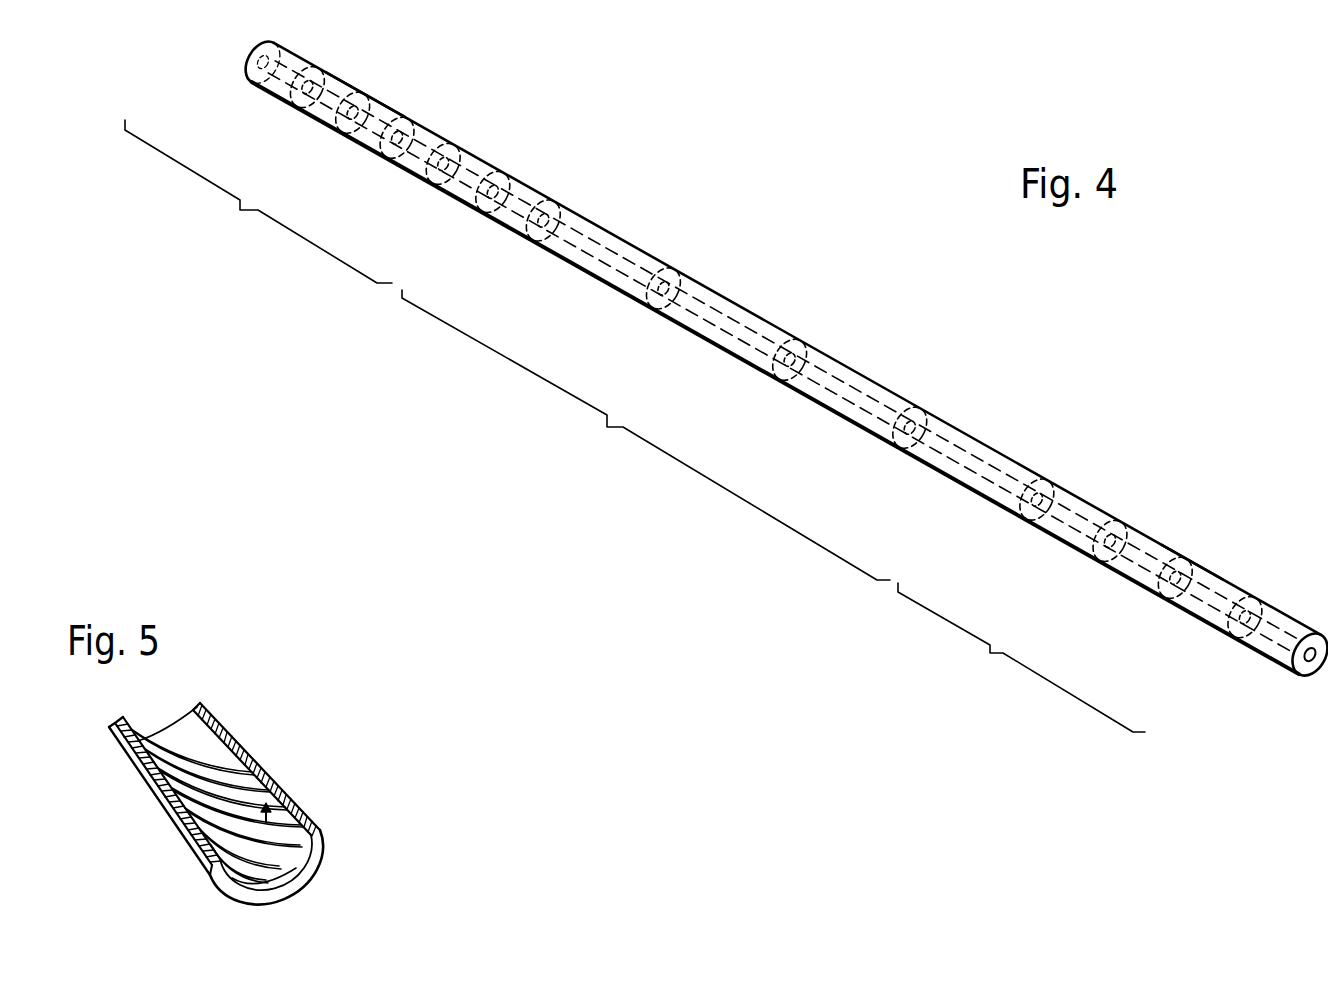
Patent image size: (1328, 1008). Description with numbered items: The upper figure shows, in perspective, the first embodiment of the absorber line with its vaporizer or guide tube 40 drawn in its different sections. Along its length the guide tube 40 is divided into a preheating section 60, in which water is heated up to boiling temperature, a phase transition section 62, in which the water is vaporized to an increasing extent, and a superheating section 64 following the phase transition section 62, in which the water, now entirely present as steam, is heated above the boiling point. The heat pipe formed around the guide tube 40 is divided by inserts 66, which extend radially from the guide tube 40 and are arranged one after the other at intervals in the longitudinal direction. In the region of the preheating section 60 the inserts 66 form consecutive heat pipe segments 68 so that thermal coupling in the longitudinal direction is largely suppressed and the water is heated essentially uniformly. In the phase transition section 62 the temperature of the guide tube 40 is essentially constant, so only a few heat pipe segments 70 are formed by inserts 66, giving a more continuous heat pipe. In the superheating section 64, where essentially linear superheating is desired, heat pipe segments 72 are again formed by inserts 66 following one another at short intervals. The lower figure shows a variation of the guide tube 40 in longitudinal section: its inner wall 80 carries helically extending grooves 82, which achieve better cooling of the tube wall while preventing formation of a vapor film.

In FIG. 5, the guide tube 40 is at (262, 759).
In FIG. 4, the preheating section 60 is at (1021, 657).
In FIG. 4, the phase transition section 62 is at (646, 435).
In FIG. 4, the superheating section 64 is at (258, 201).
In FIG. 4, the inserts 66 is at (417, 128).
In FIG. 4, the heat pipe segments 68 is at (1160, 541).
In FIG. 4, the heat pipe segments 70 is at (870, 386).
In FIG. 4, the heat pipe segments 72 is at (347, 90).
In FIG. 5, the inner wall 80 is at (285, 786).
In FIG. 5, the helically extending grooves 82 is at (300, 871).